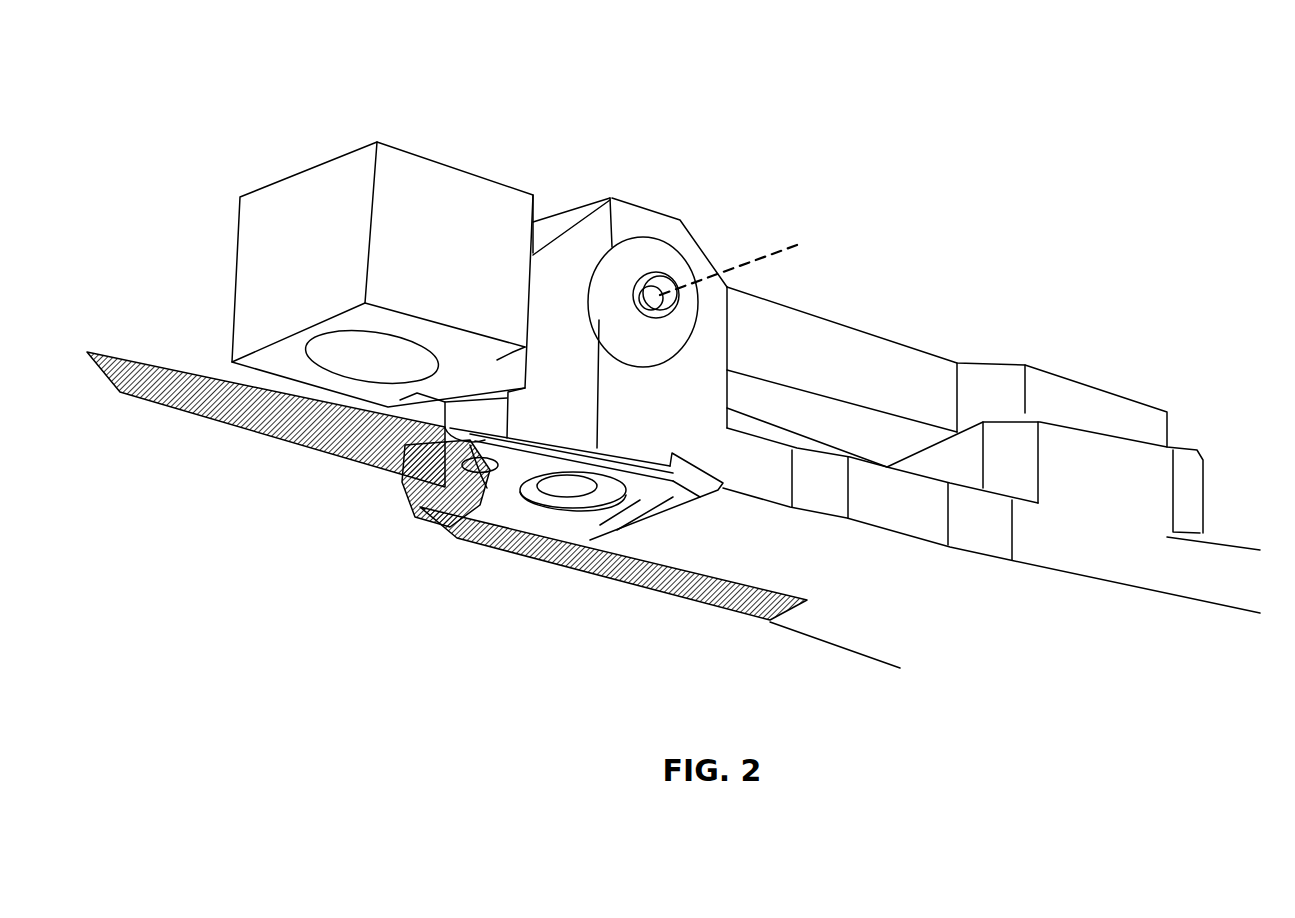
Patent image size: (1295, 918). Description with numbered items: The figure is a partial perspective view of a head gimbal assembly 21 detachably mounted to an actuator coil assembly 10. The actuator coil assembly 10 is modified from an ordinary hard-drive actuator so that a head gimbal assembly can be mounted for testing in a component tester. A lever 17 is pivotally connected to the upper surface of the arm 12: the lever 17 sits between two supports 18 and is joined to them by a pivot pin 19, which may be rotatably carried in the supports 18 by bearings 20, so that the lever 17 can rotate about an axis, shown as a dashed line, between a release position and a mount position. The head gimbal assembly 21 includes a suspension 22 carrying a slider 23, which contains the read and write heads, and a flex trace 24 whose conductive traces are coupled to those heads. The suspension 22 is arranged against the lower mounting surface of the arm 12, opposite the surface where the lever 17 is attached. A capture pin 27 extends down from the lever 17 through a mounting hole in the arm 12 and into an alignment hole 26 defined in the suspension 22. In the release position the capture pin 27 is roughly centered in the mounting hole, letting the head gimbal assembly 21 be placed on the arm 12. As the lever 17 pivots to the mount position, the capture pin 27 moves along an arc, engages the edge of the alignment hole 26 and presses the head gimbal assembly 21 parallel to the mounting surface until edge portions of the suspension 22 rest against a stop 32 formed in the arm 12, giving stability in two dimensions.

The actuator coil assembly 10 is at (912, 258).
The arm 12 is at (1168, 553).
The lever 17 is at (848, 340).
The supports 18 is at (652, 220).
The pivot pin 19 is at (672, 290).
The bearings 20 is at (633, 260).
The head gimbal assembly 21 is at (315, 473).
The suspension 22 is at (487, 488).
The slider 23 is at (163, 400).
The flex trace 24 is at (640, 580).
The alignment hole 26 is at (478, 540).
The capture pin 27 is at (563, 493).
The stop 32 is at (723, 487).